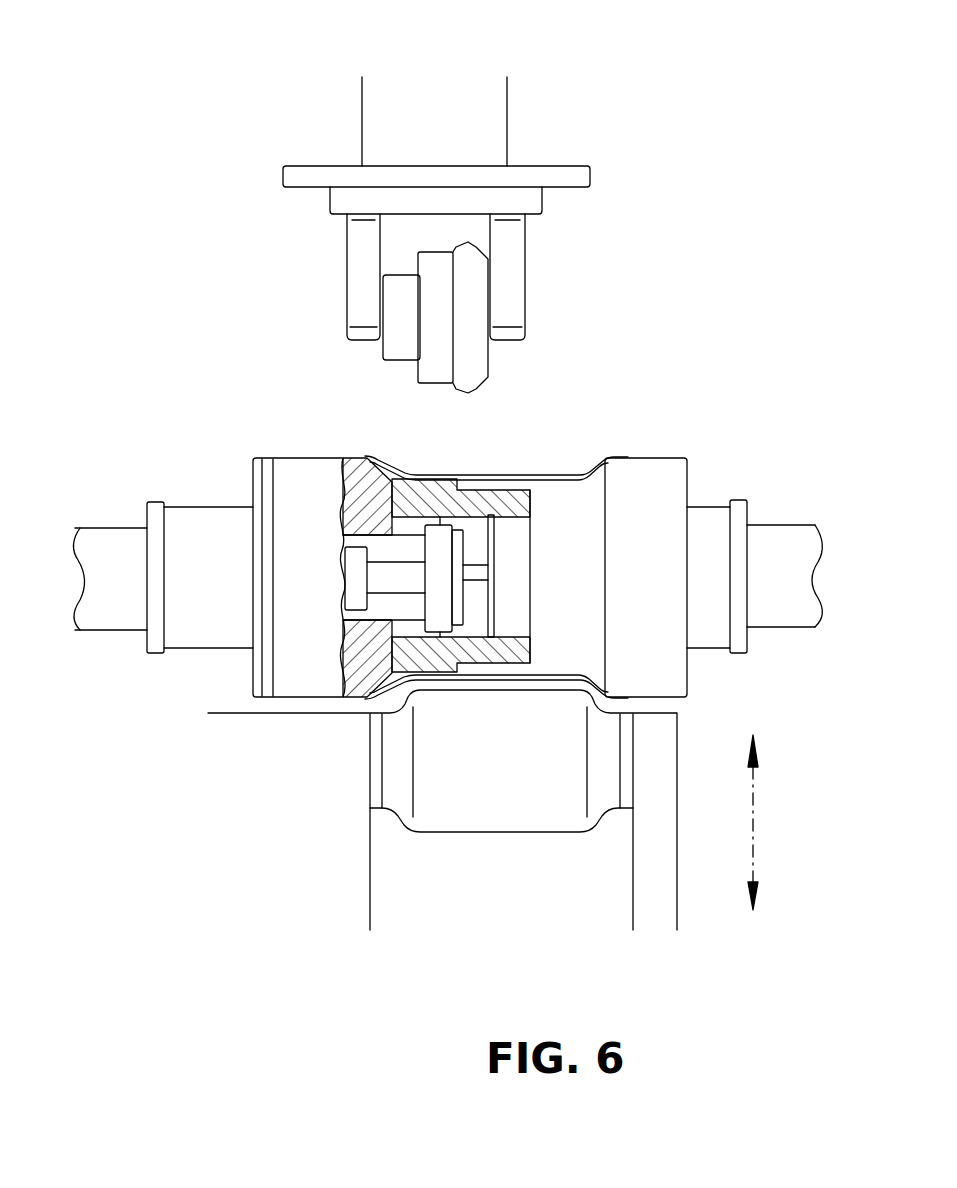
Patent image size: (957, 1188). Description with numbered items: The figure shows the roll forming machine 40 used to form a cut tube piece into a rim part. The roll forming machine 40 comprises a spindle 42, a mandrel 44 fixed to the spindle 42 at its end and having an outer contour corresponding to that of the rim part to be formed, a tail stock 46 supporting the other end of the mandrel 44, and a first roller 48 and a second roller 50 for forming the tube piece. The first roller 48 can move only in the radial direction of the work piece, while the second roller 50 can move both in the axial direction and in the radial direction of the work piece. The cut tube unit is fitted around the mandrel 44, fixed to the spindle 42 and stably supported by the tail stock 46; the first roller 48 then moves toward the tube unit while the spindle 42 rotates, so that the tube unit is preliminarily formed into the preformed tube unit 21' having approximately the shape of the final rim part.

The roll forming machine 40 is at (226, 417).
The second roller 50 is at (473, 355).
The preformed tube unit 21' is at (496, 550).
The mandrel 44 is at (513, 585).
The tail stock 46 is at (707, 527).
The spindle 42 is at (217, 625).
The first roller 48 is at (485, 810).